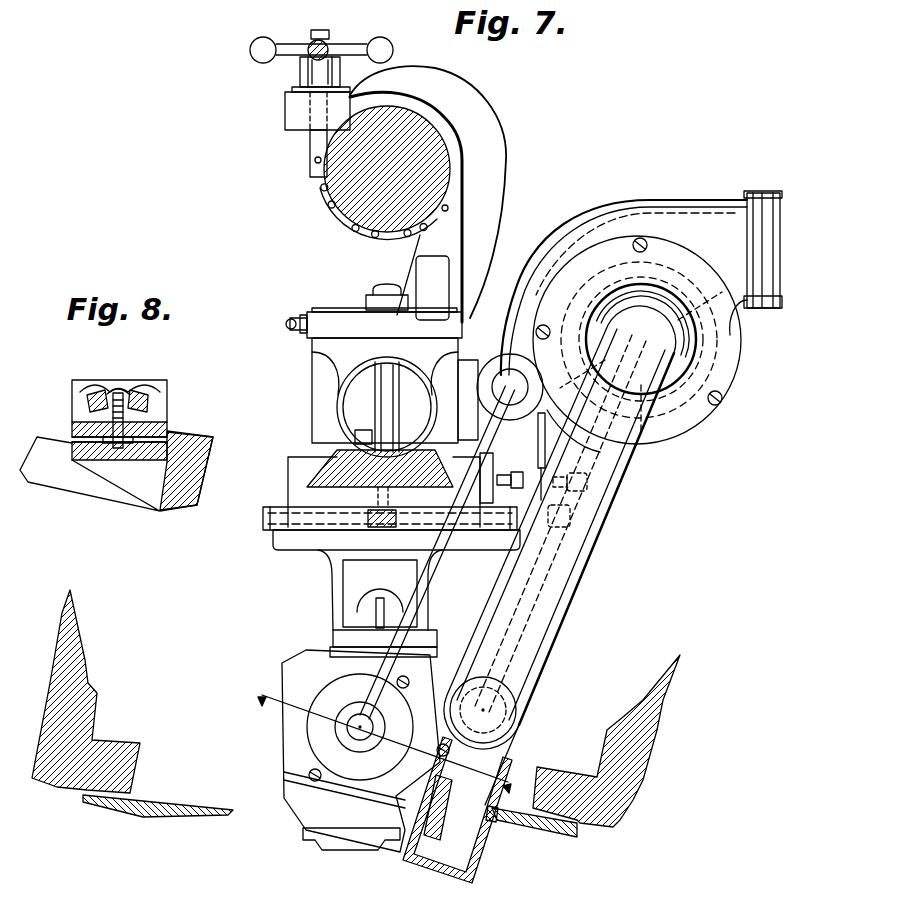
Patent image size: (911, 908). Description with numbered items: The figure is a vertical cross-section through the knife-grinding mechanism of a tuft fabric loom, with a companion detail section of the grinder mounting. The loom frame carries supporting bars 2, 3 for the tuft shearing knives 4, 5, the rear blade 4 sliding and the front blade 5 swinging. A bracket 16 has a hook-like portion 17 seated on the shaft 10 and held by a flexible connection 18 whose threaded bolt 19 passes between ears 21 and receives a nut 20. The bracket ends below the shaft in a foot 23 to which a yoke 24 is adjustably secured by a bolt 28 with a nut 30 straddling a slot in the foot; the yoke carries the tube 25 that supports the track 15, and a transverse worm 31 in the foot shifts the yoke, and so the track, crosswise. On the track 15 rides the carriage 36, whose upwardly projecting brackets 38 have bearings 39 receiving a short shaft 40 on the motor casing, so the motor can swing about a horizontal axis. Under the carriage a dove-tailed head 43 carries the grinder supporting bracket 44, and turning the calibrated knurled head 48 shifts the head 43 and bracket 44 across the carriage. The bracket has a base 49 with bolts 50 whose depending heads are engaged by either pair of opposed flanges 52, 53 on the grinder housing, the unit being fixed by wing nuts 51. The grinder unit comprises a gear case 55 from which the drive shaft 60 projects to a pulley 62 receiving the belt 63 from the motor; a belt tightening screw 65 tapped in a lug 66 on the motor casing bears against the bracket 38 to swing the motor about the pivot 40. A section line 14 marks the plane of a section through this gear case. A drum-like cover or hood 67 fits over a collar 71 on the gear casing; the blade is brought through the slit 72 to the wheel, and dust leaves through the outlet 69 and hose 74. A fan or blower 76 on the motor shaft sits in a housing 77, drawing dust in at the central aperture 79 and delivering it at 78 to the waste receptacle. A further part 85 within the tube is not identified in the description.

In FIG. 7, the supporting bar 2 is at (78, 667).
In FIG. 7, the supporting bar 3 is at (643, 700).
In FIG. 7, the slidable or rear blade 4 is at (177, 801).
In FIG. 7, the swinging or front blade 5 is at (548, 834).
In FIG. 7, the shaft 10 is at (395, 208).
In FIG. 7, the section line 14 is at (381, 738).
In FIG. 7, the track 15 is at (336, 472).
In FIG. 7, the bracket 16 is at (489, 243).
In FIG. 7, the hook-like portion 17 is at (428, 69).
In FIG. 7, the flexible connection 18 is at (340, 219).
In FIG. 7, the threaded bolt 19 is at (312, 147).
In FIG. 7, the nut 20 is at (342, 42).
In FIG. 7, the ears 21 is at (292, 108).
In FIG. 7, the foot 23 is at (450, 323).
In FIG. 7, the yoke 24 is at (450, 350).
In FIG. 7, the tube 25 is at (401, 375).
In FIG. 7, the bolt 28 is at (396, 430).
In FIG. 7, the nut 30 is at (370, 297).
In FIG. 7, the transverse worm 31 is at (298, 316).
In FIG. 7, the carriage 36 is at (288, 493).
In FIG. 7, the brackets 38 is at (478, 431).
In FIG. 7, the bearings 39 is at (489, 377).
In FIG. 7, the short shaft 40 is at (522, 380).
In FIG. 7, the head 43 is at (295, 541).
In FIG. 7, the grinder supporting bracket 44 is at (436, 586).
In FIG. 8, the grinder supporting bracket 44 is at (95, 386).
In FIG. 7, the calibrated knurled head 48 is at (573, 514).
In FIG. 7, the base 49 is at (430, 629).
In FIG. 8, the base 49 is at (167, 430).
In FIG. 8, the bolts 50 is at (119, 392).
In FIG. 7, the wing nut 51 is at (392, 604).
In FIG. 8, the wing nut 51 is at (148, 394).
In FIG. 7, the flanges 52 is at (340, 648).
In FIG. 8, the flanges 52 is at (72, 440).
In FIG. 7, the flanges 53 is at (361, 852).
In FIG. 7, the gear case 55 is at (281, 758).
In FIG. 7, the drive shaft 60 is at (360, 716).
In FIG. 7, the pulley 62 is at (313, 730).
In FIG. 7, the belt 63 is at (403, 573).
In FIG. 7, the belt tightening screw 65 is at (497, 470).
In FIG. 7, the lug 66 is at (546, 441).
In FIG. 7, the cover or hood 67 is at (440, 873).
In FIG. 7, the dust outlet 69 is at (506, 704).
In FIG. 7, the collar 71 is at (401, 853).
In FIG. 7, the openings or slits 72 is at (493, 818).
In FIG. 7, the flexible hose or pipe 74 is at (563, 589).
In FIG. 7, the fan or blower 76 is at (650, 288).
In FIG. 7, the housing 77 is at (723, 390).
In FIG. 7, the blower housing outlet 78 is at (761, 191).
In FIG. 7, the central aperture 79 is at (641, 347).
In FIG. 7, the bearing 85 is at (359, 430).